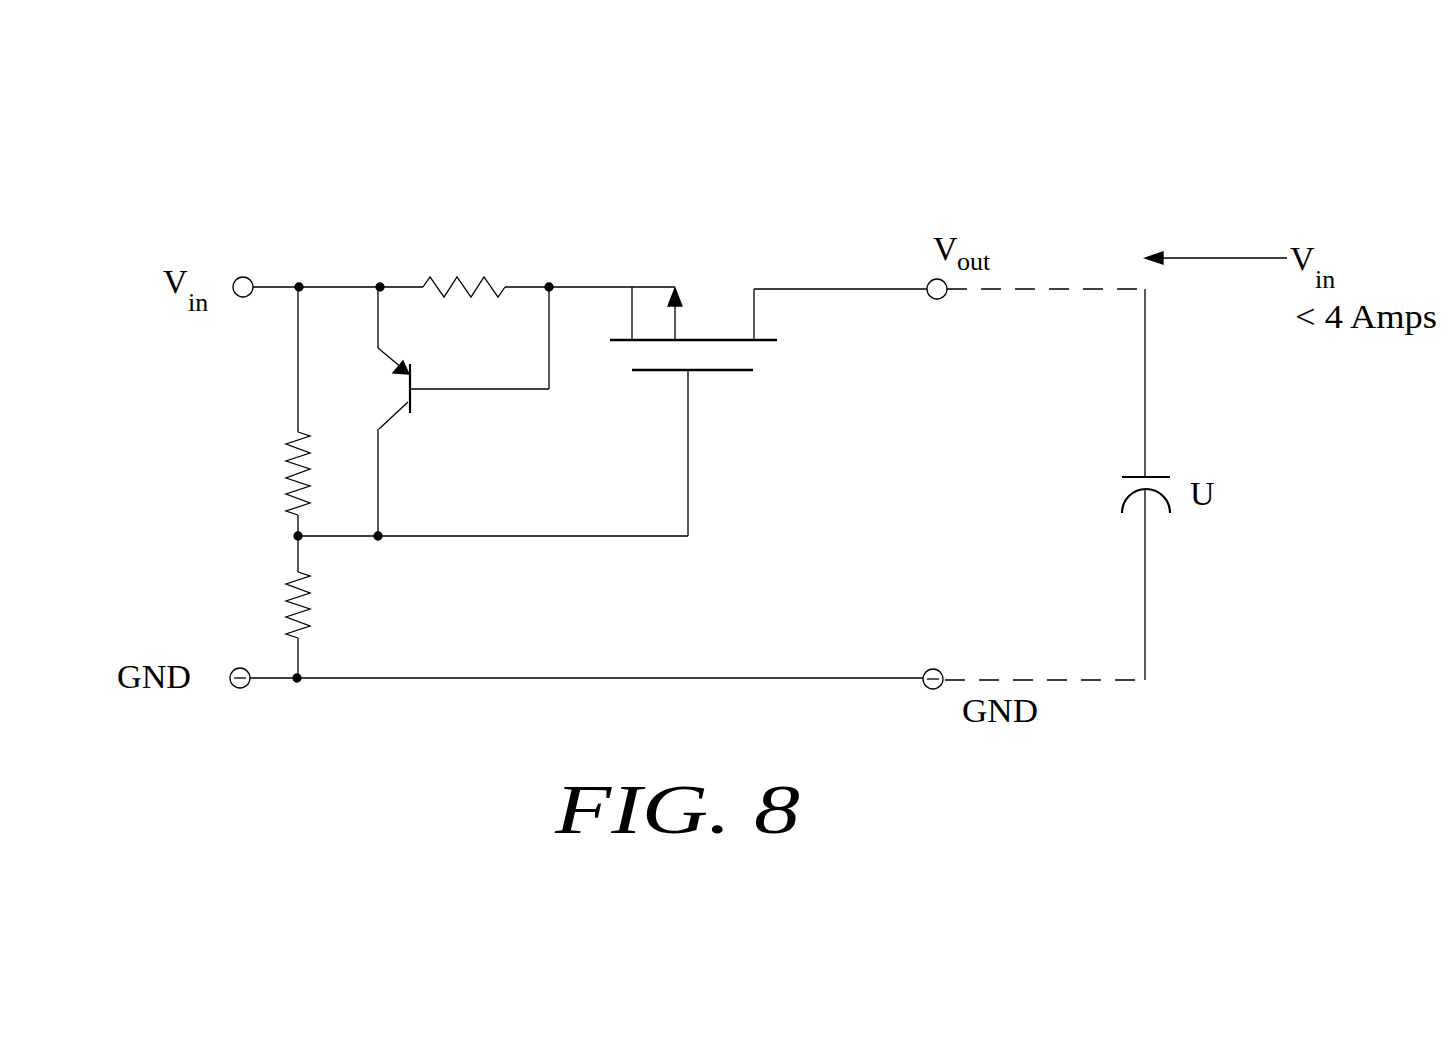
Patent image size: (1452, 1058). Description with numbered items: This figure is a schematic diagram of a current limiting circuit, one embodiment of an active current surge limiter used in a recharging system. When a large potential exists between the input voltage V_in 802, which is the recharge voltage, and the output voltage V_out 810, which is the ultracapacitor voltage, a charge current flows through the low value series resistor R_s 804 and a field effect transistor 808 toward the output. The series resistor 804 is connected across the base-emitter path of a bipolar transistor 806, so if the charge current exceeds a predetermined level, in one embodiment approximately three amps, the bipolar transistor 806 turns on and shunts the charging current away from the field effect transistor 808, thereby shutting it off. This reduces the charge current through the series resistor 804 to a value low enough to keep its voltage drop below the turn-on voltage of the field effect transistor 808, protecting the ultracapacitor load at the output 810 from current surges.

The input voltage 802 is at (251, 273).
The sense resistor Rs 804 is at (504, 268).
The bipolar transistor 806 is at (403, 392).
The field effect transistor 808 is at (716, 307).
The output voltage 810 is at (1002, 238).